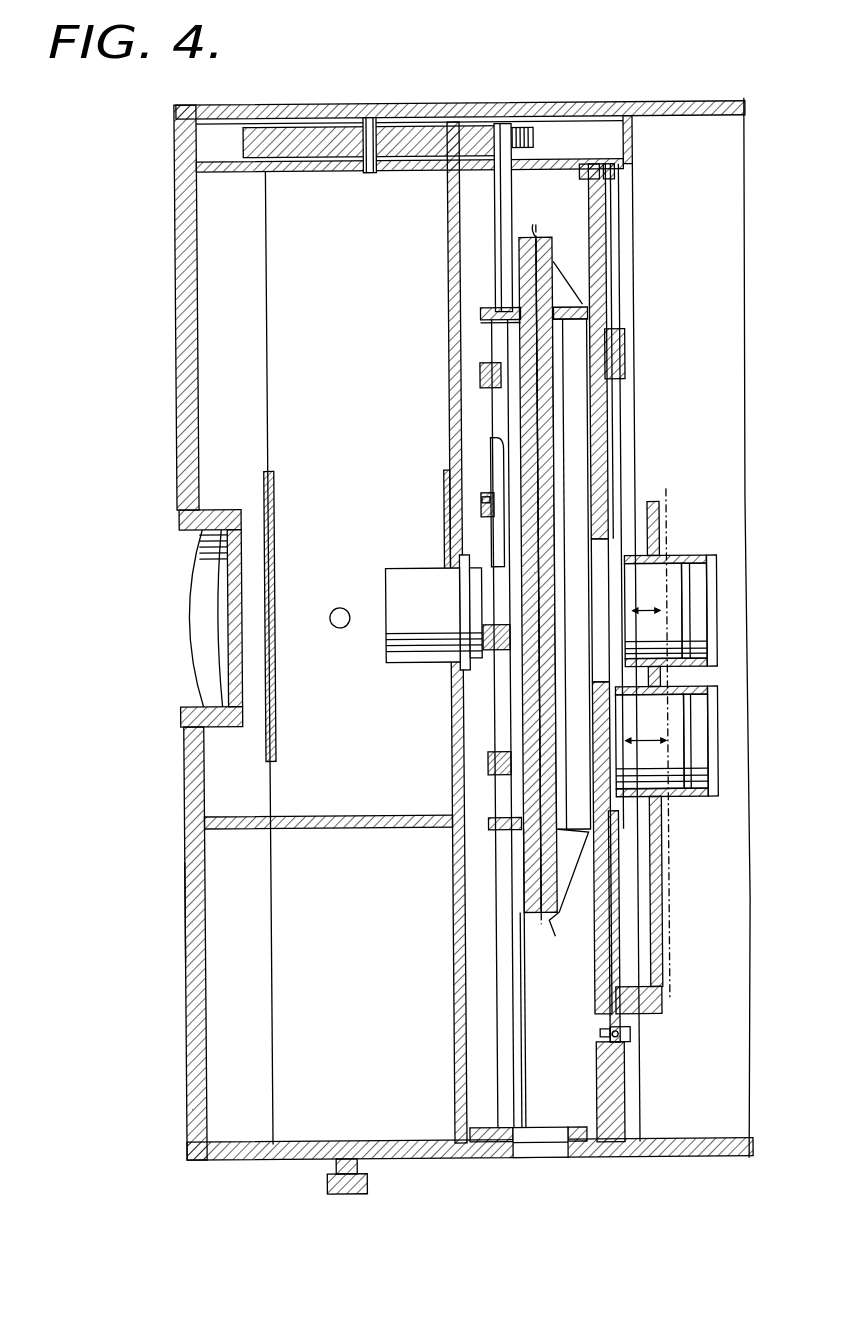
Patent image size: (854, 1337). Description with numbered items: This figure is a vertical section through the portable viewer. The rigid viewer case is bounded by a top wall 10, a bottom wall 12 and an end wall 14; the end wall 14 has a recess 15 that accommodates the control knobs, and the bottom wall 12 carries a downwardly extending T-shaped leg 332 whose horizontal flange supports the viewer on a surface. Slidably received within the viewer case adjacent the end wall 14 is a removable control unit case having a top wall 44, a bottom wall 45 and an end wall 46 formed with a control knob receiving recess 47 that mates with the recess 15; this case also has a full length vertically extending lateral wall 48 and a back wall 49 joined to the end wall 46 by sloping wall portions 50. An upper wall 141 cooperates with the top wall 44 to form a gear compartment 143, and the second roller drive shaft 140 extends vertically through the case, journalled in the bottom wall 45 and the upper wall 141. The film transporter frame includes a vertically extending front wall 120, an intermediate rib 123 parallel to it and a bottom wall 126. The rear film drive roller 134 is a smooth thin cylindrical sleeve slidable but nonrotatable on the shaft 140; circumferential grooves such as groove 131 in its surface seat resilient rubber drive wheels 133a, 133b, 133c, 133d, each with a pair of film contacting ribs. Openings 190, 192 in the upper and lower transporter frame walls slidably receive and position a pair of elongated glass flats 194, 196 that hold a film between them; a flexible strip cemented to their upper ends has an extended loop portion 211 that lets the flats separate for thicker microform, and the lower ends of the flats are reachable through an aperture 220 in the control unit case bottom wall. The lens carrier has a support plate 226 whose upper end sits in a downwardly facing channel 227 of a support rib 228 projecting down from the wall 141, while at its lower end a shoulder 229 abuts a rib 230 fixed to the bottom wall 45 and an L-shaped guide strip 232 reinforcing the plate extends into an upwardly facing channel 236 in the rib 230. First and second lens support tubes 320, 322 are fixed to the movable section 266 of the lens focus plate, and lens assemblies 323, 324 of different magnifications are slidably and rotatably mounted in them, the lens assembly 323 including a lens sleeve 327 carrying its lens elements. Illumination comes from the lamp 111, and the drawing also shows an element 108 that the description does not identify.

The top wall 10 is at (318, 103).
The bottom wall 12 is at (400, 1158).
The end wall 14 is at (183, 962).
The recess 15 is at (190, 532).
The top wall 44 is at (423, 110).
The bottom wall 45 is at (347, 1143).
The end wall 46 is at (183, 915).
The control knob receiving recess 47 is at (228, 550).
The lateral wall 48 is at (494, 432).
The back wall 49 is at (343, 386).
The sloping wall portions 50 is at (268, 345).
The motor block 108 is at (430, 662).
The lamp 111 is at (340, 606).
The front wall 120 is at (483, 312).
The intermediate rib 123 is at (582, 422).
The bottom wall 126 is at (490, 822).
The groove 131 is at (483, 498).
The resilient drive wheel 133a is at (482, 378).
The resilient drive wheel 133b is at (482, 508).
The resilient drive wheel 133c is at (483, 634).
The resilient drive wheel 133d is at (487, 765).
The film drive roller 134 is at (492, 455).
The second roller drive shaft 140 is at (512, 195).
The upper wall 141 is at (322, 172).
The gear compartment 143 is at (546, 132).
The opening 190 is at (522, 323).
The opening 192 is at (530, 835).
The glass flat 194 is at (522, 412).
The glass flat 196 is at (556, 470).
The loop portion 211 is at (534, 238).
The aperture 220 is at (532, 1128).
The support plate 226 is at (600, 226).
The channel 227 is at (598, 172).
The support rib 228 is at (612, 180).
The shoulder 229 is at (600, 1036).
The rib 230 is at (615, 1080).
The L-shaped guide strip 232 is at (625, 1045).
The upwardly facing channel 236 is at (618, 1030).
The movable section 266 is at (658, 505).
The first lens support tube 320 is at (660, 810).
The second lens support tube 322 is at (672, 557).
The lens assembly 323 is at (717, 706).
The lens assembly 324 is at (707, 580).
The lens sleeve 327 is at (707, 748).
The T-shaped leg 332 is at (347, 1195).